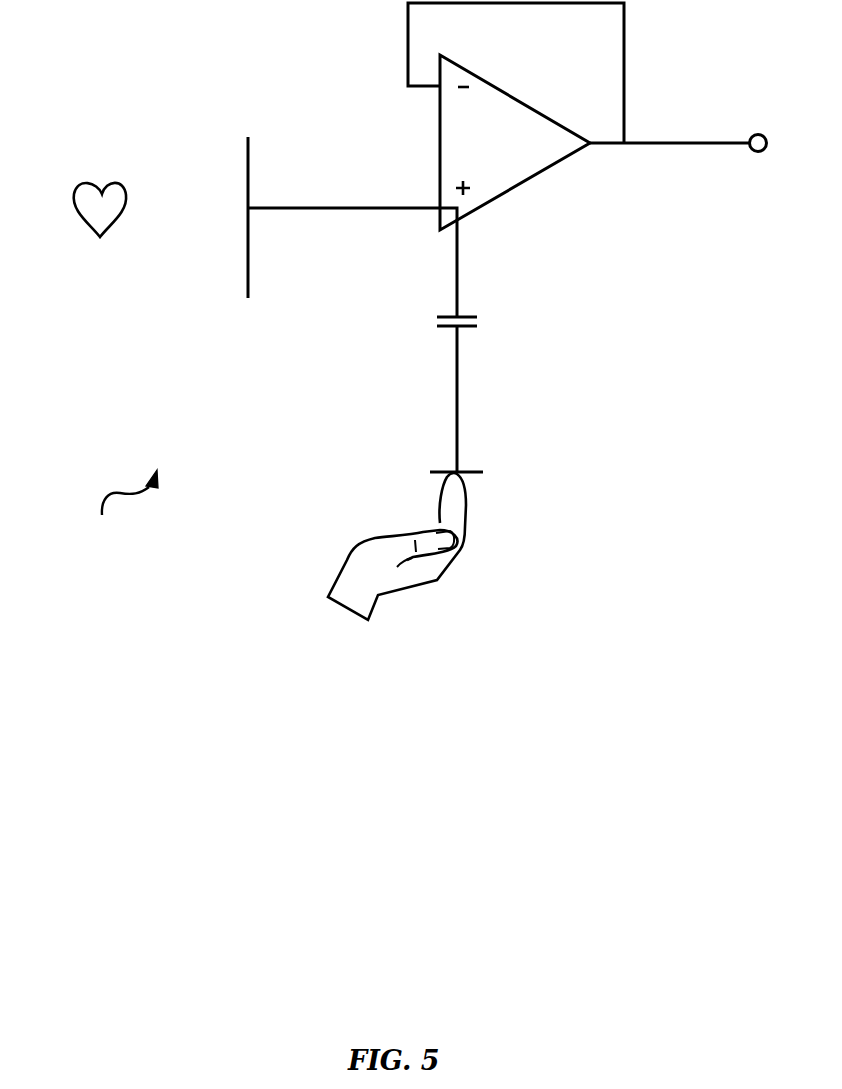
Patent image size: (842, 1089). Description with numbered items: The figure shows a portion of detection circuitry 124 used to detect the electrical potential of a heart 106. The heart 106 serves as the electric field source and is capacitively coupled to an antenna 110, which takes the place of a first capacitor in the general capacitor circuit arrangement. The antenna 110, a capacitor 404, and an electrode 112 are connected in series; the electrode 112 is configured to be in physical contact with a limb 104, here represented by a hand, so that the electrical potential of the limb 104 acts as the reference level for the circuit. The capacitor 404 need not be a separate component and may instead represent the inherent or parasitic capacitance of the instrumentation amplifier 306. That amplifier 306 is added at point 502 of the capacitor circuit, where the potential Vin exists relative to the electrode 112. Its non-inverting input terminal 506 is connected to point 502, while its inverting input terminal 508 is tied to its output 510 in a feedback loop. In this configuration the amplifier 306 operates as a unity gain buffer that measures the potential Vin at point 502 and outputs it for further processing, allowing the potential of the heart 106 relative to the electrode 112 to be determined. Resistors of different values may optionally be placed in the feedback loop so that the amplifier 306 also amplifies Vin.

The limb 104 is at (343, 607).
The heart 106 is at (82, 217).
The antenna 110 is at (249, 171).
The electrode 112 is at (470, 475).
The detection circuitry 124 is at (123, 508).
The instrumentation amplifier 306 is at (526, 181).
The second capacitor 404 is at (442, 329).
The point 502 is at (431, 206).
The non-inverting input terminal 506 is at (463, 181).
The inverting input terminal 508 is at (463, 89).
The output 510 is at (764, 135).